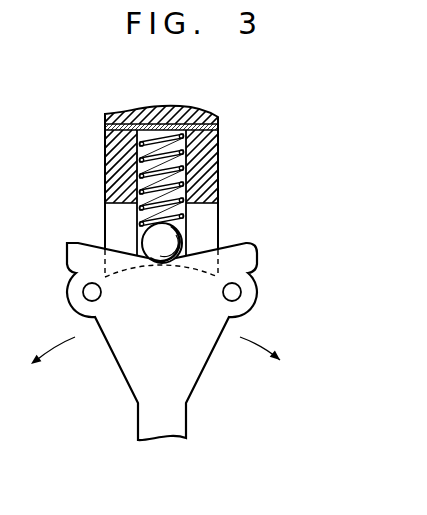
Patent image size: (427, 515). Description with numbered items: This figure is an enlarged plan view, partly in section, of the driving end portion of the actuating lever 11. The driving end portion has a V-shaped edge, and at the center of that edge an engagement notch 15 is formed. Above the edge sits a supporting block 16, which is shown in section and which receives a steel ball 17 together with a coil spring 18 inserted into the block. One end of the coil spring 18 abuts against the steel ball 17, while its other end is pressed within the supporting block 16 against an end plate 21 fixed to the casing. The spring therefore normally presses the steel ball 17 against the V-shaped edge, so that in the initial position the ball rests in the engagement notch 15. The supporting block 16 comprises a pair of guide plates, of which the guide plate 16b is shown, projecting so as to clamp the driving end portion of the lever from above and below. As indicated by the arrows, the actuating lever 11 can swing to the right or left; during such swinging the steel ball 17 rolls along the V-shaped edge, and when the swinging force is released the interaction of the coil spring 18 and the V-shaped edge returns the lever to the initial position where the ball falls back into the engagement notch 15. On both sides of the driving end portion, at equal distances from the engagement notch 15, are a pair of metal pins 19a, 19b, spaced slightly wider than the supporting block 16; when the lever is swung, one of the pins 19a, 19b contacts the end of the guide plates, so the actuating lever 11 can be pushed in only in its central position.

The actuating lever 11 is at (165, 397).
The engagement notch 15 is at (158, 267).
The supporting block 16 is at (256, 170).
The guide plate 16b is at (116, 240).
The steel ball 17 is at (178, 230).
The coil spring 18 is at (131, 173).
The metal pin 19a is at (83, 291).
The metal pin 19b is at (241, 292).
The end plate 21 is at (218, 126).